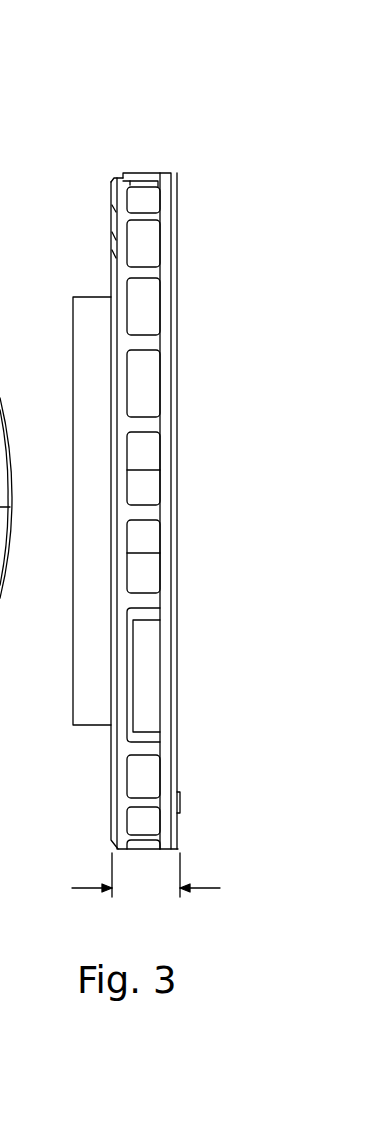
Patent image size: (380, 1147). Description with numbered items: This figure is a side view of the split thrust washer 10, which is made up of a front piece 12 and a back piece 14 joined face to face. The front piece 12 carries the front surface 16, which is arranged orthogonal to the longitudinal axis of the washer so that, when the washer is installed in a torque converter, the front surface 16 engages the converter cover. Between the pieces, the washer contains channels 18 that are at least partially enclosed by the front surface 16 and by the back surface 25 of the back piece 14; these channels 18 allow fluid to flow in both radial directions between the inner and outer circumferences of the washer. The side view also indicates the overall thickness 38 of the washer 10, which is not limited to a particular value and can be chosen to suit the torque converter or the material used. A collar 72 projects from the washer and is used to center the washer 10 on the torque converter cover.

The split thrust washer 10 is at (90, 112).
The front piece 12 is at (117, 174).
The back piece 14 is at (169, 173).
The front surface 16 is at (110, 260).
The channel 18 is at (148, 380).
The back surface 25 is at (176, 252).
The thickness 38 is at (133, 877).
The collar 72 is at (88, 708).